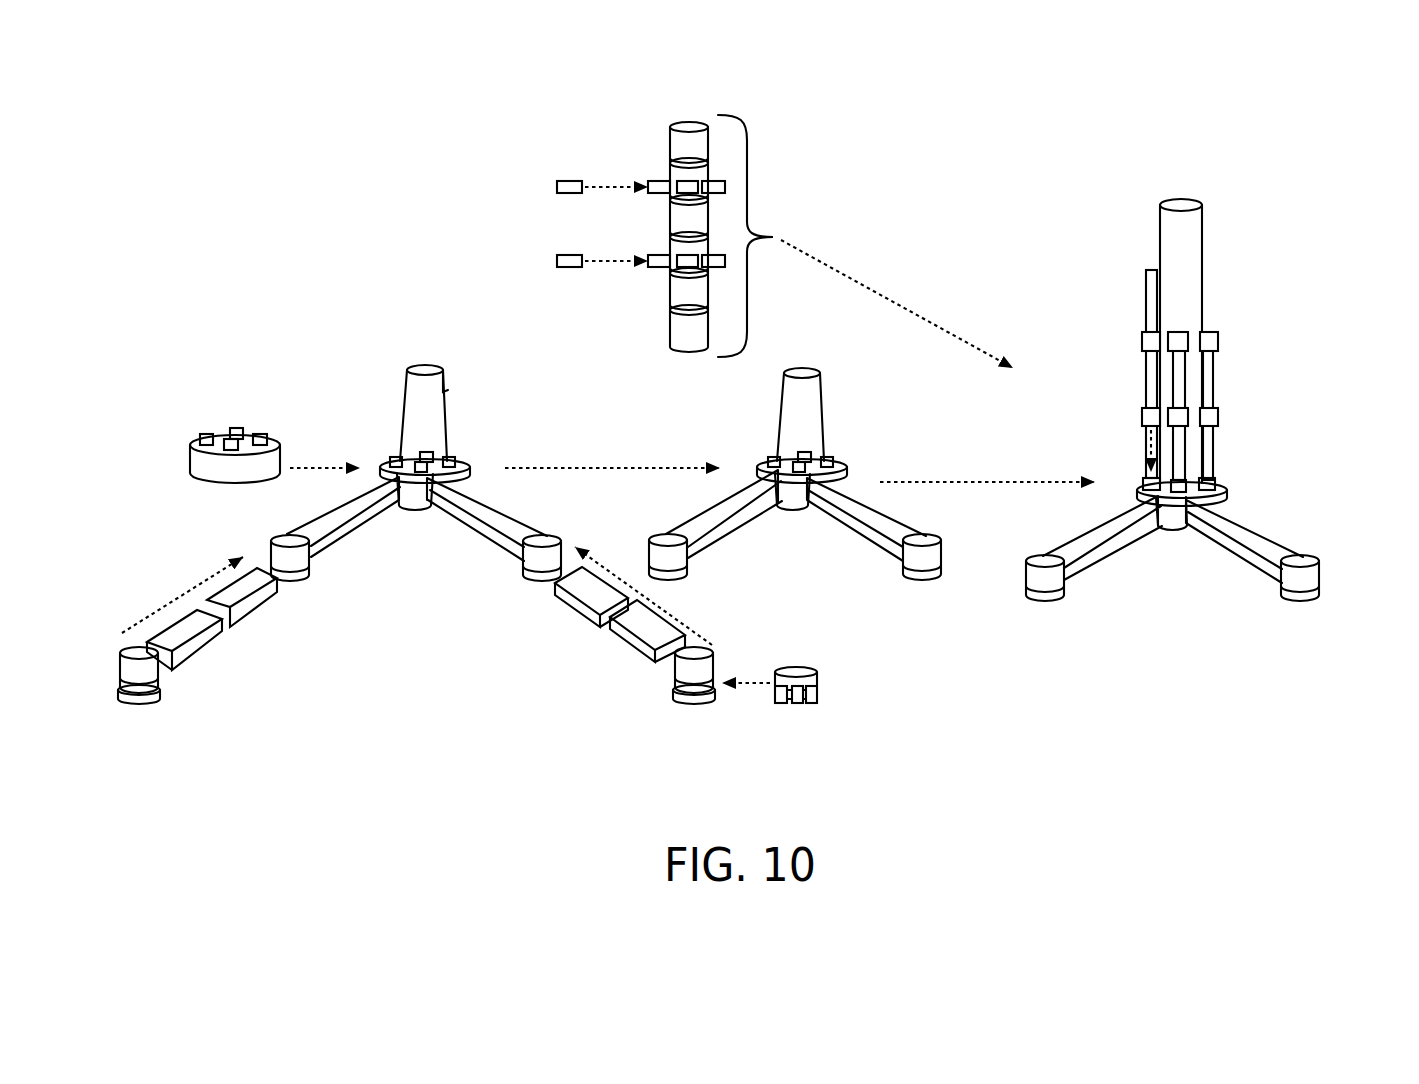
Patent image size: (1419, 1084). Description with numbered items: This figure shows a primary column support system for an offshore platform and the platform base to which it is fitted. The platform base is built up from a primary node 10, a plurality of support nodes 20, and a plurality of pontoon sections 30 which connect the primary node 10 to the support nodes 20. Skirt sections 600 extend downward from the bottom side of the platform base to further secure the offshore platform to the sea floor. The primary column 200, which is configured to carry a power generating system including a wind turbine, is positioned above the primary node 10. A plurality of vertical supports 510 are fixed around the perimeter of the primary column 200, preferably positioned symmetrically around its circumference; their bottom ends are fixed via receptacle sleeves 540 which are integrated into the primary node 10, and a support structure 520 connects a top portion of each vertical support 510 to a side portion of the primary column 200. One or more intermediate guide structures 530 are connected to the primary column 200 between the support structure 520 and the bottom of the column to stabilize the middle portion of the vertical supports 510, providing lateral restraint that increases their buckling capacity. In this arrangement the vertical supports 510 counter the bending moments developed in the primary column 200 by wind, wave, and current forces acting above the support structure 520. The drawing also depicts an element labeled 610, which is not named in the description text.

The primary node 10 is at (800, 507).
The support node 20 is at (818, 368).
The pontoon section 30 is at (780, 421).
The primary column 200 is at (1202, 237).
The vertical support 510 is at (1215, 372).
The support structure 520 is at (1215, 335).
The intermediate guide structure 530 is at (1157, 375).
The receptacle sleeve 540 is at (825, 456).
The skirt section 600 is at (136, 705).
The connector piece 610 is at (812, 705).